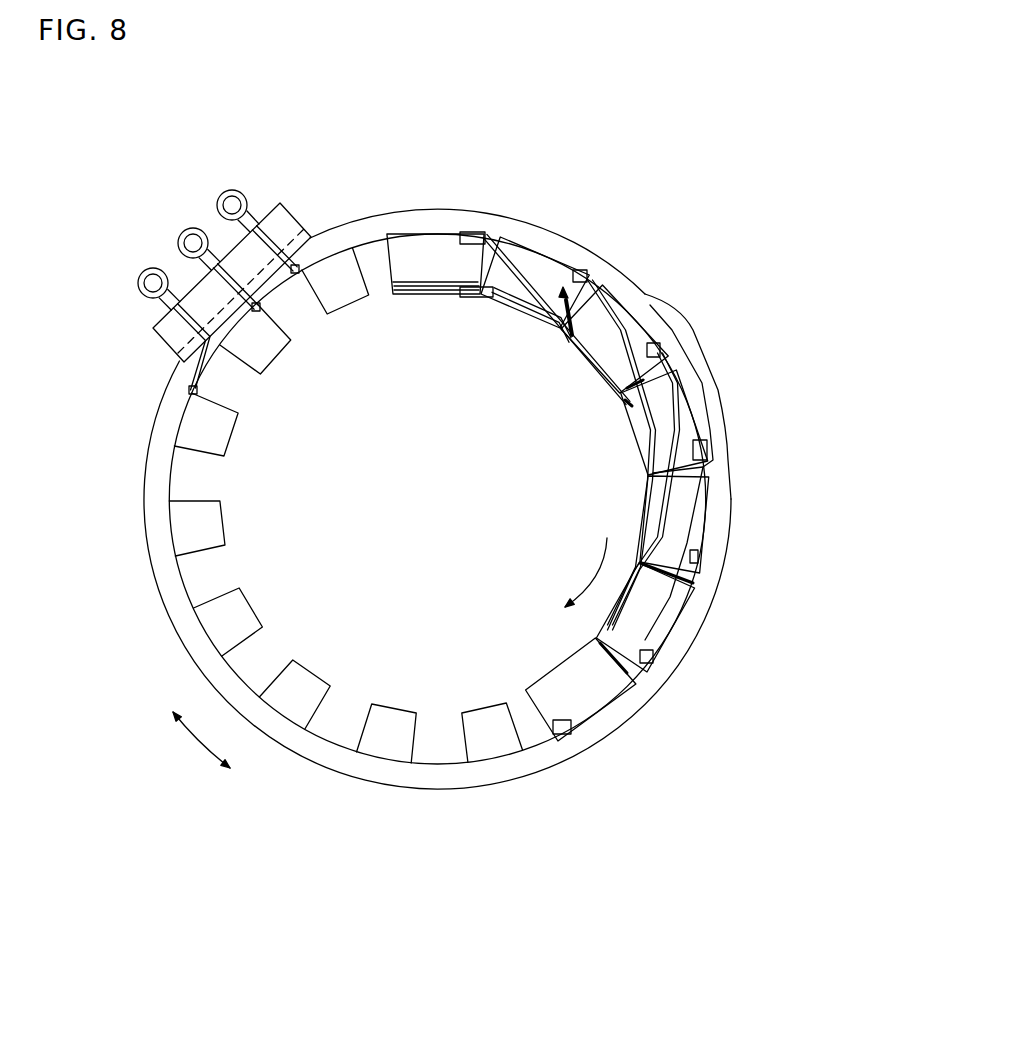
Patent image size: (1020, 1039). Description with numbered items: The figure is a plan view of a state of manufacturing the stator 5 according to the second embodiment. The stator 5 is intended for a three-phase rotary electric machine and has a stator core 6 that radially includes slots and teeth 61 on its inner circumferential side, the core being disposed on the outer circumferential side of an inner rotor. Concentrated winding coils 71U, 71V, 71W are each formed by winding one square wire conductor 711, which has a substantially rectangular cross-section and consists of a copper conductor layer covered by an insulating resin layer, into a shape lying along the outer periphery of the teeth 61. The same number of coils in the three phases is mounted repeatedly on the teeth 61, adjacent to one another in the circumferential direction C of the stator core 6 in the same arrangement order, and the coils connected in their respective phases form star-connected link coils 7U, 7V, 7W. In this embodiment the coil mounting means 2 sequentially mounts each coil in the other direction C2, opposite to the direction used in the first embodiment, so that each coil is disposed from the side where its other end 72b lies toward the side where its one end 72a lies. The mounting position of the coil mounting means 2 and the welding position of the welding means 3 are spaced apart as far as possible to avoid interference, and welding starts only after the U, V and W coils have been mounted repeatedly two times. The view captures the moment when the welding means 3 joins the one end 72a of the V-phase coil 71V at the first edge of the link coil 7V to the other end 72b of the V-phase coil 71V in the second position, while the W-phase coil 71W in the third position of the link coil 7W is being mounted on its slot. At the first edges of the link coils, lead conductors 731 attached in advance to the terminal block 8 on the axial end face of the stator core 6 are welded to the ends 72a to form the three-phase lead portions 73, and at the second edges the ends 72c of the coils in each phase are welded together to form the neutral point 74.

The coil mounting means 2 is at (437, 542).
The welding means 3 is at (437, 542).
The stator 5 is at (619, 469).
The stator core 6 is at (530, 785).
The teeth 61 is at (603, 683).
The link coil in U phase 7U is at (545, 645).
The link coil in V phase 7V is at (595, 405).
The link coil in W phase 7W is at (547, 487).
The concentrated winding coil in U phase 71U is at (617, 343).
The concentrated winding coil in V phase 71V is at (553, 292).
The concentrated winding coil in W phase 71W is at (430, 258).
The square wire conductor 711 is at (680, 387).
The one end 72a is at (662, 355).
The other end 72b is at (662, 345).
The end 72c is at (528, 365).
The lead portions 73 is at (214, 248).
The lead conductor 731 is at (252, 205).
The neutral point 74 is at (533, 283).
The terminal block 8 is at (287, 230).
The circumferential direction C is at (201, 742).
The other direction C2 is at (607, 545).